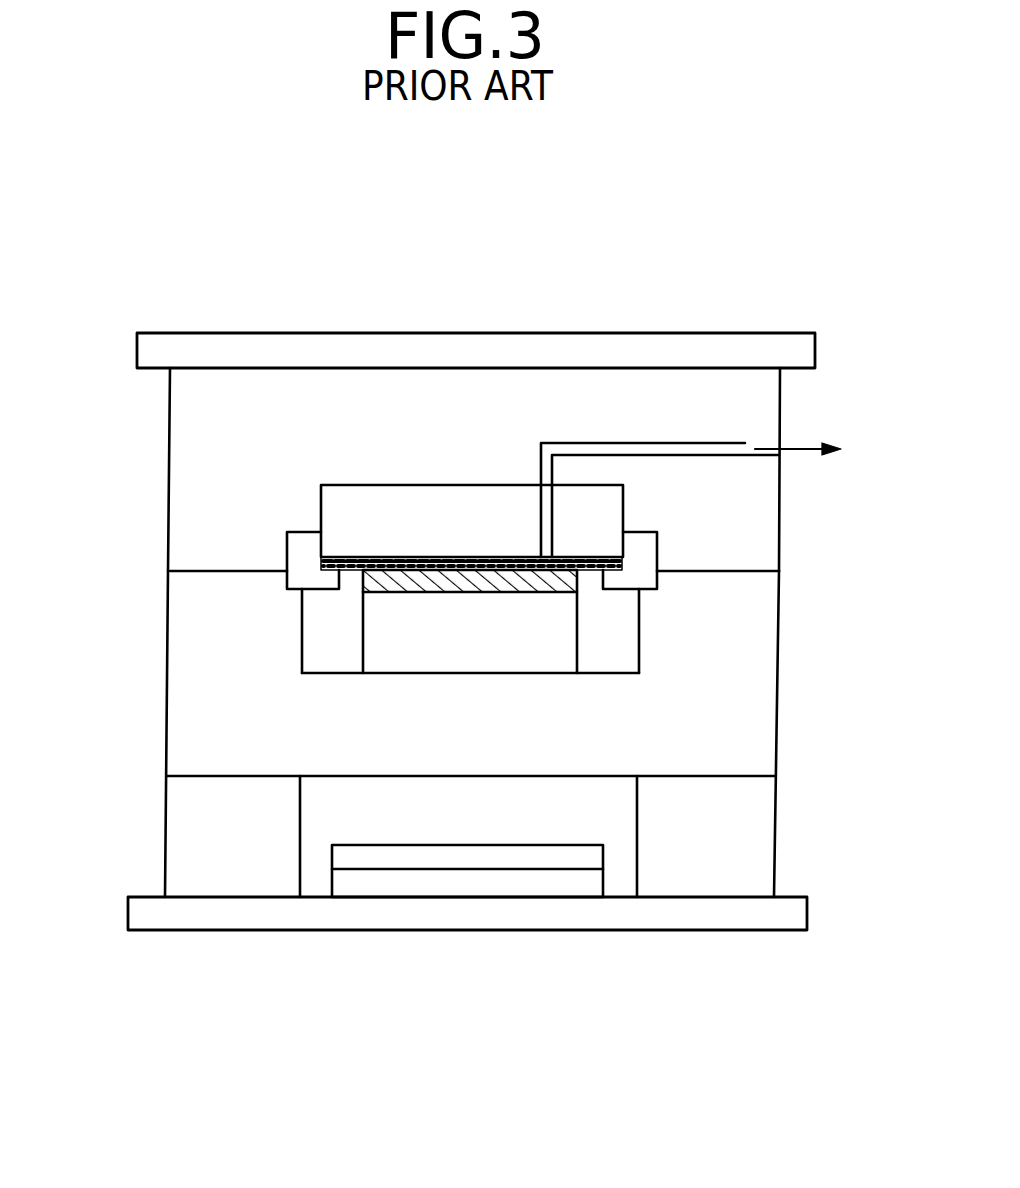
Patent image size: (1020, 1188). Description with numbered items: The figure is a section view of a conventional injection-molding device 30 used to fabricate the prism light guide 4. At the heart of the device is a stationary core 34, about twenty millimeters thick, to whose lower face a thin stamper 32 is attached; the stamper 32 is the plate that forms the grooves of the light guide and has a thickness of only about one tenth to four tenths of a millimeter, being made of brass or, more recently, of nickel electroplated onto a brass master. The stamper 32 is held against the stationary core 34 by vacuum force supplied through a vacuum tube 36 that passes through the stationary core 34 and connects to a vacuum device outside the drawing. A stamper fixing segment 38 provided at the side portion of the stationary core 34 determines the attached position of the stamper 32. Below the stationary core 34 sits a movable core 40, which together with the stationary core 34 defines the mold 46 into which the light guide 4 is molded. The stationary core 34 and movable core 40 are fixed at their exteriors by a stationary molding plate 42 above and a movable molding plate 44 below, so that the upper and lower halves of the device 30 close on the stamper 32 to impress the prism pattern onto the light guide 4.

The injection-molding device 30 is at (288, 252).
The stamper 32 is at (432, 557).
The stationary core 34 is at (478, 512).
The vacuum tube 36 is at (745, 444).
The stamper fixing segment 38 is at (652, 557).
The movable core 40 is at (608, 638).
The stationary molding plate 42 is at (185, 478).
The movable molding plate 44 is at (182, 687).
The mold 46 is at (273, 488).
The prism light guide 4 is at (397, 592).